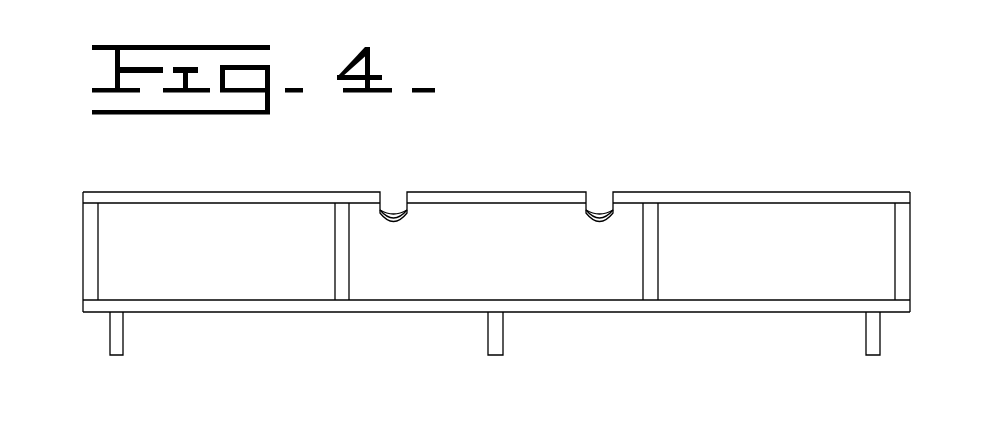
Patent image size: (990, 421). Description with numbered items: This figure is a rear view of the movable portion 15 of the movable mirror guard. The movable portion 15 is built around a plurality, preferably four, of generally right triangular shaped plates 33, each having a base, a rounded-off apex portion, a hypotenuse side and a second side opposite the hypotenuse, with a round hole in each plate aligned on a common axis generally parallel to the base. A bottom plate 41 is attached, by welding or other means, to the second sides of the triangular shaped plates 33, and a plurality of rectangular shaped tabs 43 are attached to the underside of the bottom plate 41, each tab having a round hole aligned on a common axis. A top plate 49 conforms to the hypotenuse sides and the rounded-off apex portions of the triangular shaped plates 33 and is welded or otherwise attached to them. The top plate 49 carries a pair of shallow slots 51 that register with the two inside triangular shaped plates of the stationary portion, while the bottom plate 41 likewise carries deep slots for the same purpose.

The movable portion 15 is at (524, 250).
The second or right triangular shaped plate 33 is at (98, 282).
The bottom plate 41 is at (680, 312).
The rectangular shaped tab 43 is at (118, 356).
The top plate 49 is at (478, 190).
The shallow slot 51 is at (390, 200).